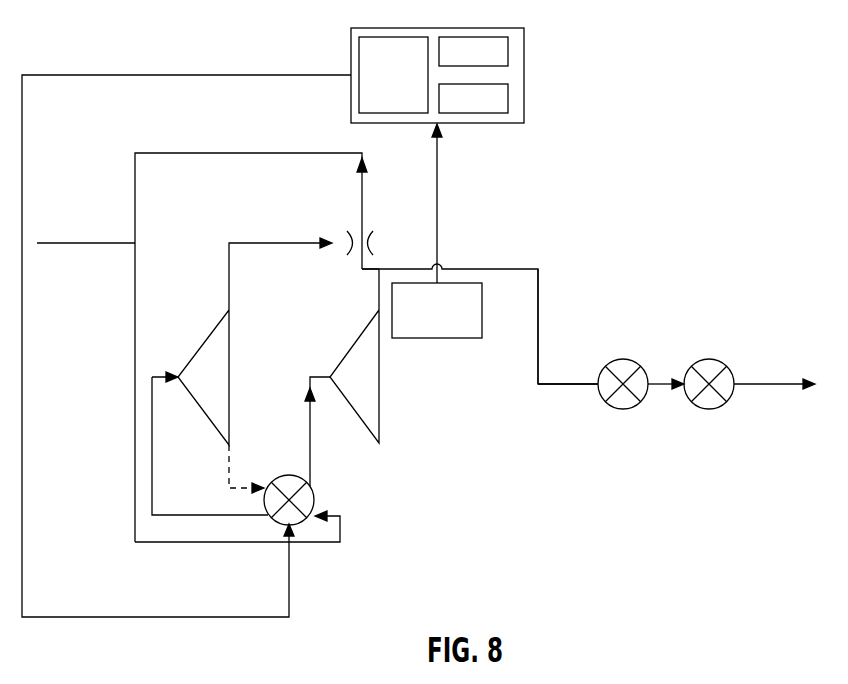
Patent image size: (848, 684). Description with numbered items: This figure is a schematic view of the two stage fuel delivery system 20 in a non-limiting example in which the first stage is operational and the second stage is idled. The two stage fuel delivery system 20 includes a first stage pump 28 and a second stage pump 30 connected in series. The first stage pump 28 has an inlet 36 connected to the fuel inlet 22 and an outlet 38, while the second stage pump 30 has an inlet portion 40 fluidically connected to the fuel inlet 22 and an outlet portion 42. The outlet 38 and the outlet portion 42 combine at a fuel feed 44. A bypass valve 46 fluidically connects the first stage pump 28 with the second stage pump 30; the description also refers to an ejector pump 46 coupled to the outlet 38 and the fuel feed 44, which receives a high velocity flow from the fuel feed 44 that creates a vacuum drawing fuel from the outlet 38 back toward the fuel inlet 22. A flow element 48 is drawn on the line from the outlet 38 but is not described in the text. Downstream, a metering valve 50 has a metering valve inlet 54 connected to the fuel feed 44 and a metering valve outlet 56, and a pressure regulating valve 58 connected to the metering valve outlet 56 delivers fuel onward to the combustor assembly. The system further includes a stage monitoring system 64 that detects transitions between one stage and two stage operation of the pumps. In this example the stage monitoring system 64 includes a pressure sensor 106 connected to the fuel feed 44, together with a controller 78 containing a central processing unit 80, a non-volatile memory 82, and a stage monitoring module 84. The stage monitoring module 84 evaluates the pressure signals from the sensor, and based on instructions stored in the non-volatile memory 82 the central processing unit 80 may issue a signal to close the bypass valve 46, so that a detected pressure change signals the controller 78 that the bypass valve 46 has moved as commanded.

The two stage fuel delivery system 20 is at (201, 124).
The fuel inlet 22 is at (63, 244).
The first stage pump 28 is at (213, 413).
The second stage pump 30 is at (360, 403).
The inlet 36 is at (150, 441).
The outlet 38 is at (230, 262).
The inlet portion 40 is at (312, 455).
The outlet portion 42 is at (377, 288).
The fuel feed 44 is at (533, 268).
The bypass valve 46 is at (282, 518).
The flow restriction 48 is at (351, 238).
The metering valve 50 is at (617, 366).
The metering valve inlet 54 is at (545, 386).
The metering valve outlet 56 is at (658, 383).
The pressure regulating valve 58 is at (718, 368).
The stage monitoring system 64 is at (580, 113).
The controller 78 is at (343, 44).
The central processing unit 80 is at (409, 90).
The non-volatile memory 82 is at (502, 52).
The stage monitoring module 84 is at (502, 101).
The pressure sensor 106 is at (460, 339).